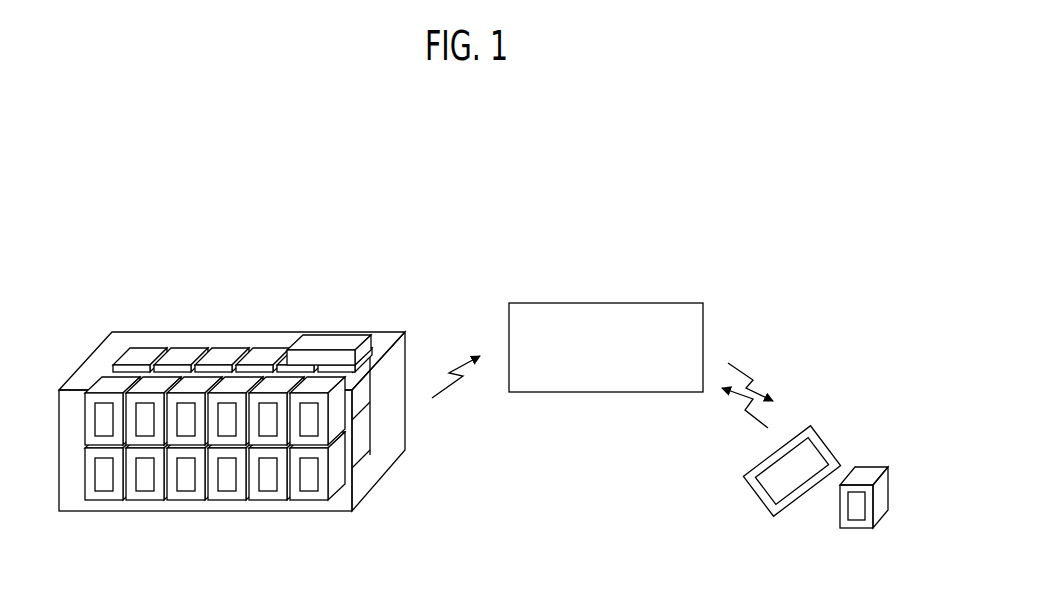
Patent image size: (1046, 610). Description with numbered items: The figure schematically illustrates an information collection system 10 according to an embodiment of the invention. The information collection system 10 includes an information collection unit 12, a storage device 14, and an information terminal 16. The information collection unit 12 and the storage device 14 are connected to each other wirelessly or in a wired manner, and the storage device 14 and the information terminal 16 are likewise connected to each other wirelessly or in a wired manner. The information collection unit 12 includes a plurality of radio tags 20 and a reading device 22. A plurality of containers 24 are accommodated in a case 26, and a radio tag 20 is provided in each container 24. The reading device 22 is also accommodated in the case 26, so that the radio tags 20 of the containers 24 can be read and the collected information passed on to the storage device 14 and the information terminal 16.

The information collection system 10 is at (801, 257).
The information collection unit 12 is at (85, 311).
The storage device 14 is at (640, 303).
The information terminal 16 is at (818, 450).
The radio tag 20 is at (103, 480).
The reading device 22 is at (325, 342).
The container 24 is at (140, 352).
The case 26 is at (407, 435).